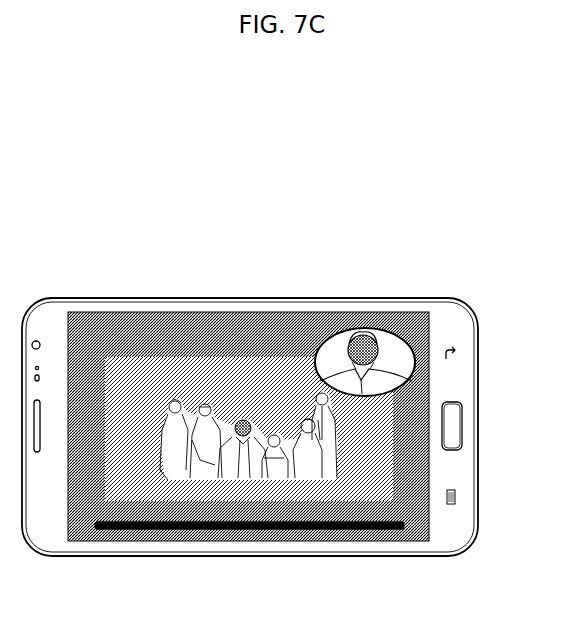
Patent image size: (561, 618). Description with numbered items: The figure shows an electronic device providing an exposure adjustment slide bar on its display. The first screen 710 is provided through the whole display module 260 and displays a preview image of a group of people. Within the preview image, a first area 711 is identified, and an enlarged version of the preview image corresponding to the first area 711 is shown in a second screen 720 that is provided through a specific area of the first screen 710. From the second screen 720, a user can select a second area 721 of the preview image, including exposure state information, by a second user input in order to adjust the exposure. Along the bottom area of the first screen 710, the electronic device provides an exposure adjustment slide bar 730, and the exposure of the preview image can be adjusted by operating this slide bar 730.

The display module 260 is at (153, 316).
The first screen 710 is at (222, 323).
The first area 711 is at (247, 420).
The second screen 720 is at (337, 334).
The second area 721 is at (385, 338).
The exposure adjustment slide bar 730 is at (387, 531).